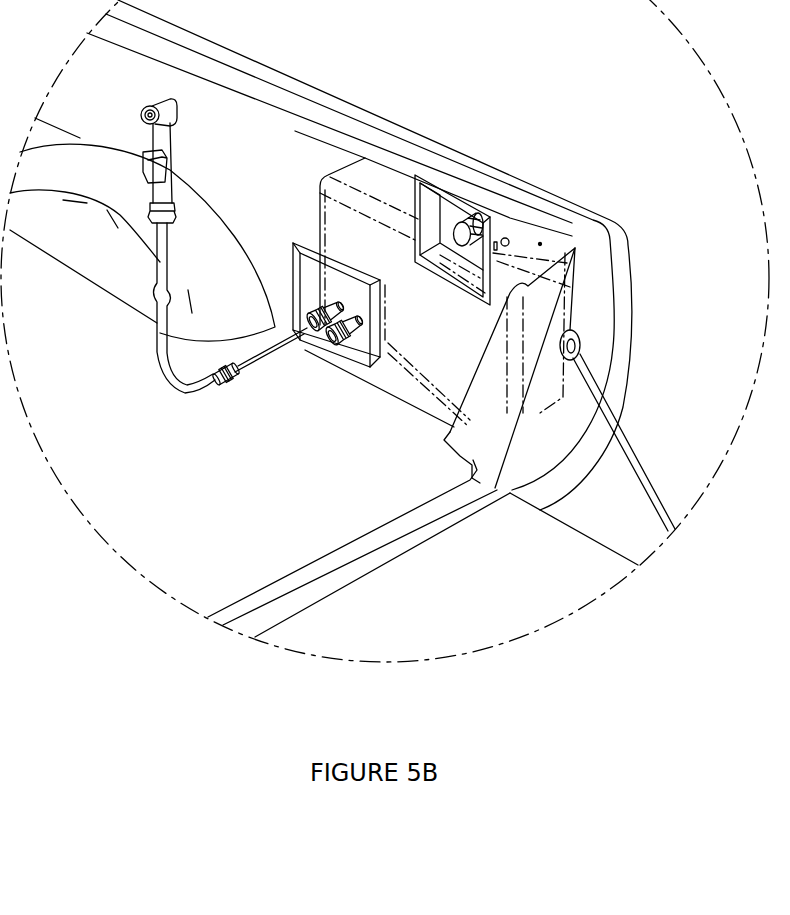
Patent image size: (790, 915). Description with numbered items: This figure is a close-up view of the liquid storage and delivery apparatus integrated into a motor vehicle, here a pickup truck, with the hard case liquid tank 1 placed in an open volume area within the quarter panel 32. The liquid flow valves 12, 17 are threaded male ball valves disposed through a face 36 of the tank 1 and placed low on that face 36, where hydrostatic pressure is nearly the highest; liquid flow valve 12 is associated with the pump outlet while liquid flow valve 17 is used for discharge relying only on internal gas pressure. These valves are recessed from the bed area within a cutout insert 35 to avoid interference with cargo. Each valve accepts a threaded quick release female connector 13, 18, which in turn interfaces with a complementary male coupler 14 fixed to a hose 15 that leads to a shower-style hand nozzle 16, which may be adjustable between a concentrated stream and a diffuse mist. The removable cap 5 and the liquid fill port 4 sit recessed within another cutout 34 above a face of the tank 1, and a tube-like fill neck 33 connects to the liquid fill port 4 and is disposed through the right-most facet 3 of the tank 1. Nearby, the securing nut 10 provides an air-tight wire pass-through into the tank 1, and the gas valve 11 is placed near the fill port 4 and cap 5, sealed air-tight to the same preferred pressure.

The hard case liquid tank 1 is at (365, 167).
The right-most facet 3 is at (445, 249).
The liquid fill port 4 is at (468, 213).
The removable cap 5 is at (462, 222).
The securing nut 10 is at (507, 240).
The gas valve 11 is at (507, 246).
The liquid flow valve 12 is at (342, 302).
The quick release female connector 13 is at (312, 330).
The male coupler 14 is at (227, 380).
The hose 15 is at (158, 350).
The shower-style hand nozzle 16 is at (173, 160).
The liquid flow valve 17 is at (367, 320).
The quick release female connector 18 is at (343, 340).
The quarter panel 32 is at (267, 143).
The tube-like fill neck 33 is at (478, 213).
The cutout 34 is at (452, 250).
The cutout insert 35 is at (333, 262).
The face 36 is at (431, 382).